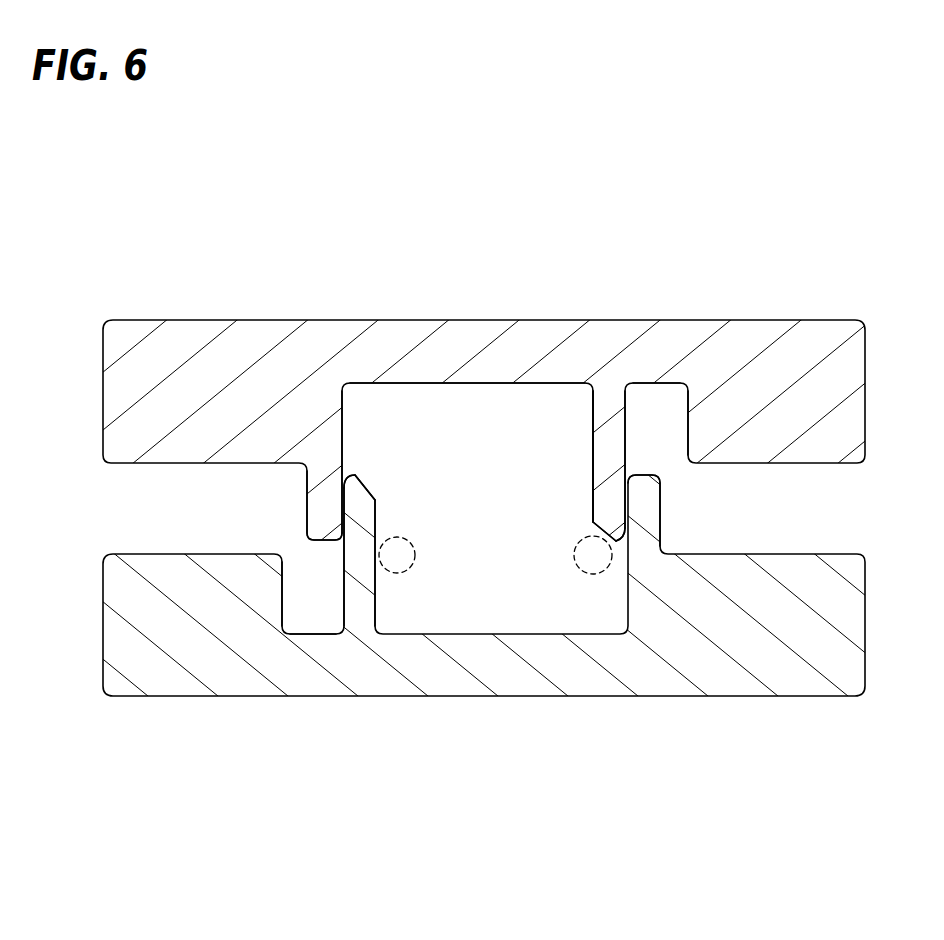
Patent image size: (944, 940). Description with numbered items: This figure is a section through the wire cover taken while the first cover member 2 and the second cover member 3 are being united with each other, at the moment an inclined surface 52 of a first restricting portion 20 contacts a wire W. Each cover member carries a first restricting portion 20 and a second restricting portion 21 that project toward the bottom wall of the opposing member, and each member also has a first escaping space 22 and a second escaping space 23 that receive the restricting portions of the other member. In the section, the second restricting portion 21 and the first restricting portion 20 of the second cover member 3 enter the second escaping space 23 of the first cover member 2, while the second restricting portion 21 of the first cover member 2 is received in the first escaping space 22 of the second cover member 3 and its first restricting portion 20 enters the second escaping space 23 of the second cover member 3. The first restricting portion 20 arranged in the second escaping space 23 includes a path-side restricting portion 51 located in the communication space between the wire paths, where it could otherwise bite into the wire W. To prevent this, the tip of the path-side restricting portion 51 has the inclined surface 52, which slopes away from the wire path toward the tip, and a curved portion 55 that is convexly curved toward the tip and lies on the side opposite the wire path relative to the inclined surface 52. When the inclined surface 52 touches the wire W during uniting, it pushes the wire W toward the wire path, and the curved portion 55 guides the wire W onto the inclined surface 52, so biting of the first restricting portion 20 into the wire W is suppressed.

The first cover member 2 is at (773, 750).
The second cover member 3 is at (724, 272).
The first restricting portion 20 is at (358, 535).
The second restricting portion 21 is at (317, 513).
The first escaping space 22 is at (643, 398).
The second escaping space 23 is at (360, 405).
The path-side restricting portion 51 is at (358, 513).
The inclined surface 52 is at (372, 487).
The curved portion 55 is at (353, 477).
The wire W is at (397, 558).